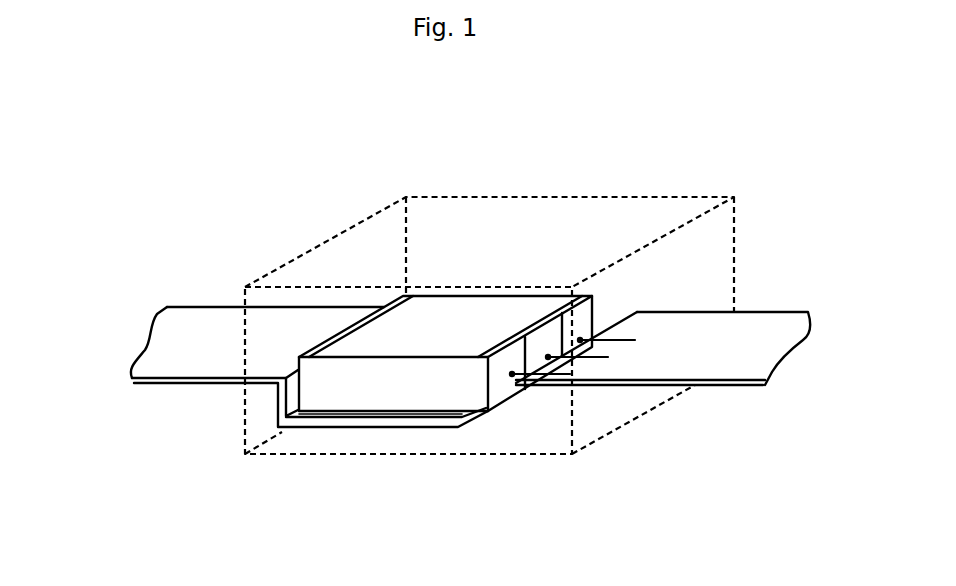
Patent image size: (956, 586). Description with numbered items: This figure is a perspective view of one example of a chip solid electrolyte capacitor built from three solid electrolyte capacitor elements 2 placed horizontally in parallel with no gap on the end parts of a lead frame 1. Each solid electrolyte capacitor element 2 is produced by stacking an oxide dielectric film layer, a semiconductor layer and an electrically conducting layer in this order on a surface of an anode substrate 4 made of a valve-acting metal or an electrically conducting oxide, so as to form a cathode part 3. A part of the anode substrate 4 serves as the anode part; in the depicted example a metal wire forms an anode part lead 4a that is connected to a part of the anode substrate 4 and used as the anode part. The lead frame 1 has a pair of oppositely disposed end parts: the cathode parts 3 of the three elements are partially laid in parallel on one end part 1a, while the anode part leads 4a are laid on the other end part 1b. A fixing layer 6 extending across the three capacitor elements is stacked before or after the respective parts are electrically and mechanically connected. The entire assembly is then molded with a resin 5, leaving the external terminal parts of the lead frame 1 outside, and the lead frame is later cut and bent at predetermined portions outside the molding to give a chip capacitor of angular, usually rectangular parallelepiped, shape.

The lead frame 1 is at (442, 422).
The one end part of lead frame 1a is at (397, 428).
The other end part of lead frame 1b is at (727, 388).
The solid electrolyte capacitor element 2 is at (360, 353).
The cathode part 3 is at (433, 415).
The anode substrate 4 is at (636, 388).
The anode part lead 4a is at (634, 340).
The sealing resin package 5 is at (608, 222).
The fixing layer 6 is at (438, 313).